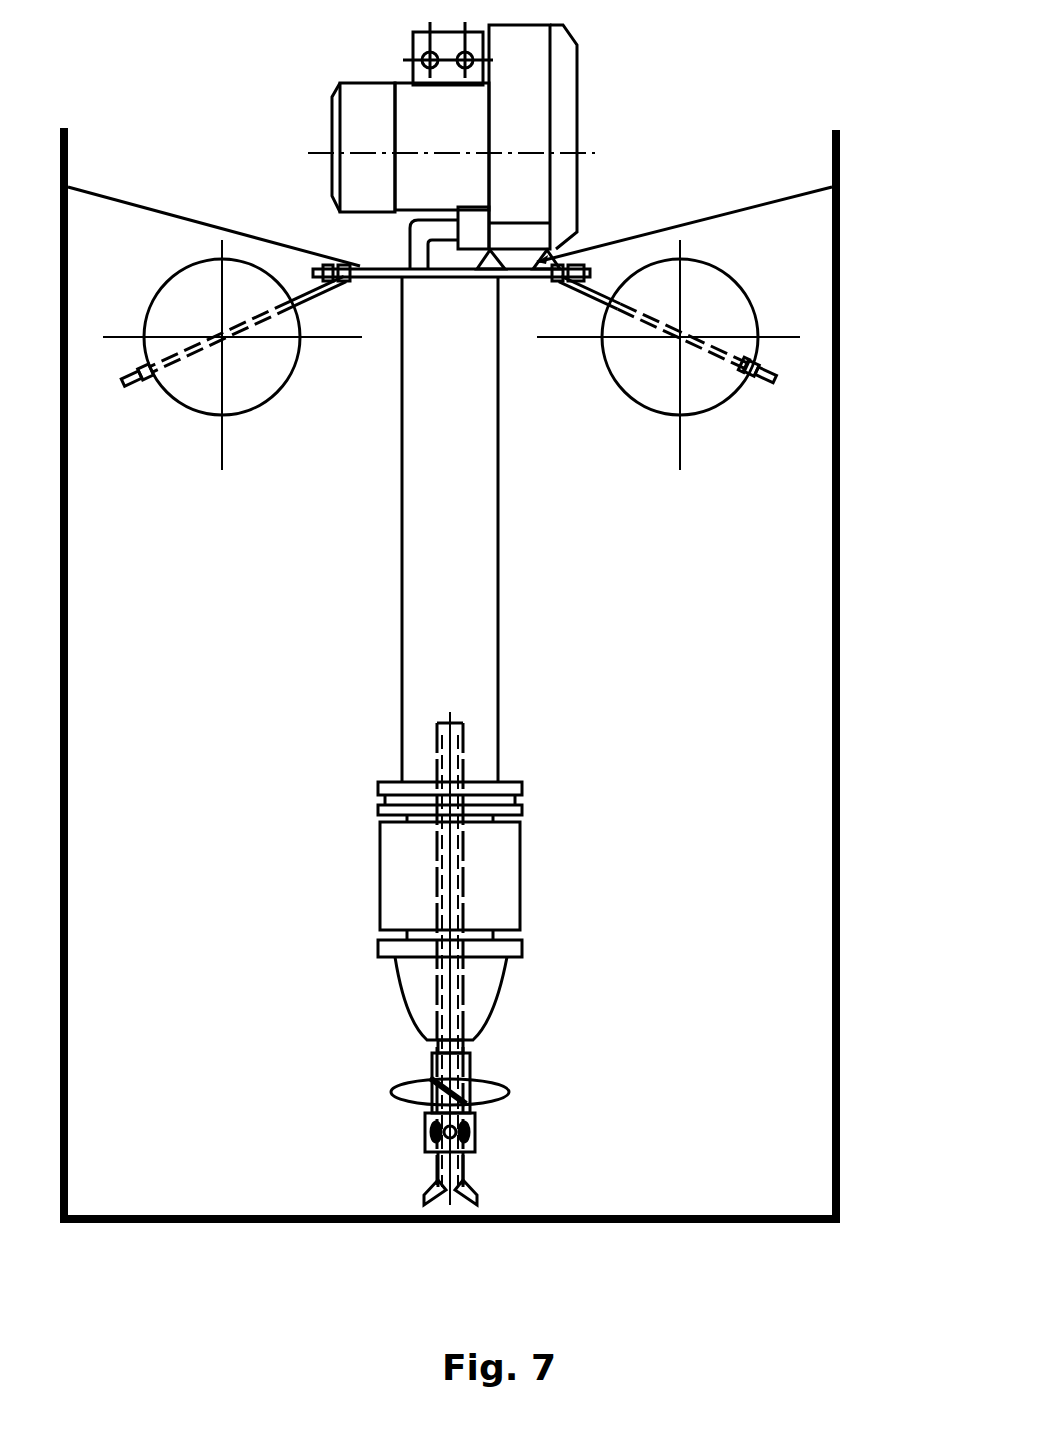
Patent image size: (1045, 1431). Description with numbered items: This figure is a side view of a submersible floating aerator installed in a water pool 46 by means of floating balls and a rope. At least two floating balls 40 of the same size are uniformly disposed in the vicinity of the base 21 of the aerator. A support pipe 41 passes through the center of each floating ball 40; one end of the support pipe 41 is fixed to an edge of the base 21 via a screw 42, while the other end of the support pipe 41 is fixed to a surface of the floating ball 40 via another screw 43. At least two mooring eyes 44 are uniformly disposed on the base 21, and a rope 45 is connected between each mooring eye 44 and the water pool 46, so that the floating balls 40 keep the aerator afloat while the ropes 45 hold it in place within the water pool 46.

The base 21 is at (385, 273).
The floating ball 40 is at (461, 350).
The support pipe 41 is at (777, 379).
The screw 42 is at (544, 285).
The screw 43 is at (785, 355).
The mooring eye 44 is at (363, 265).
The rope 45 is at (178, 213).
The water pool 46 is at (840, 158).